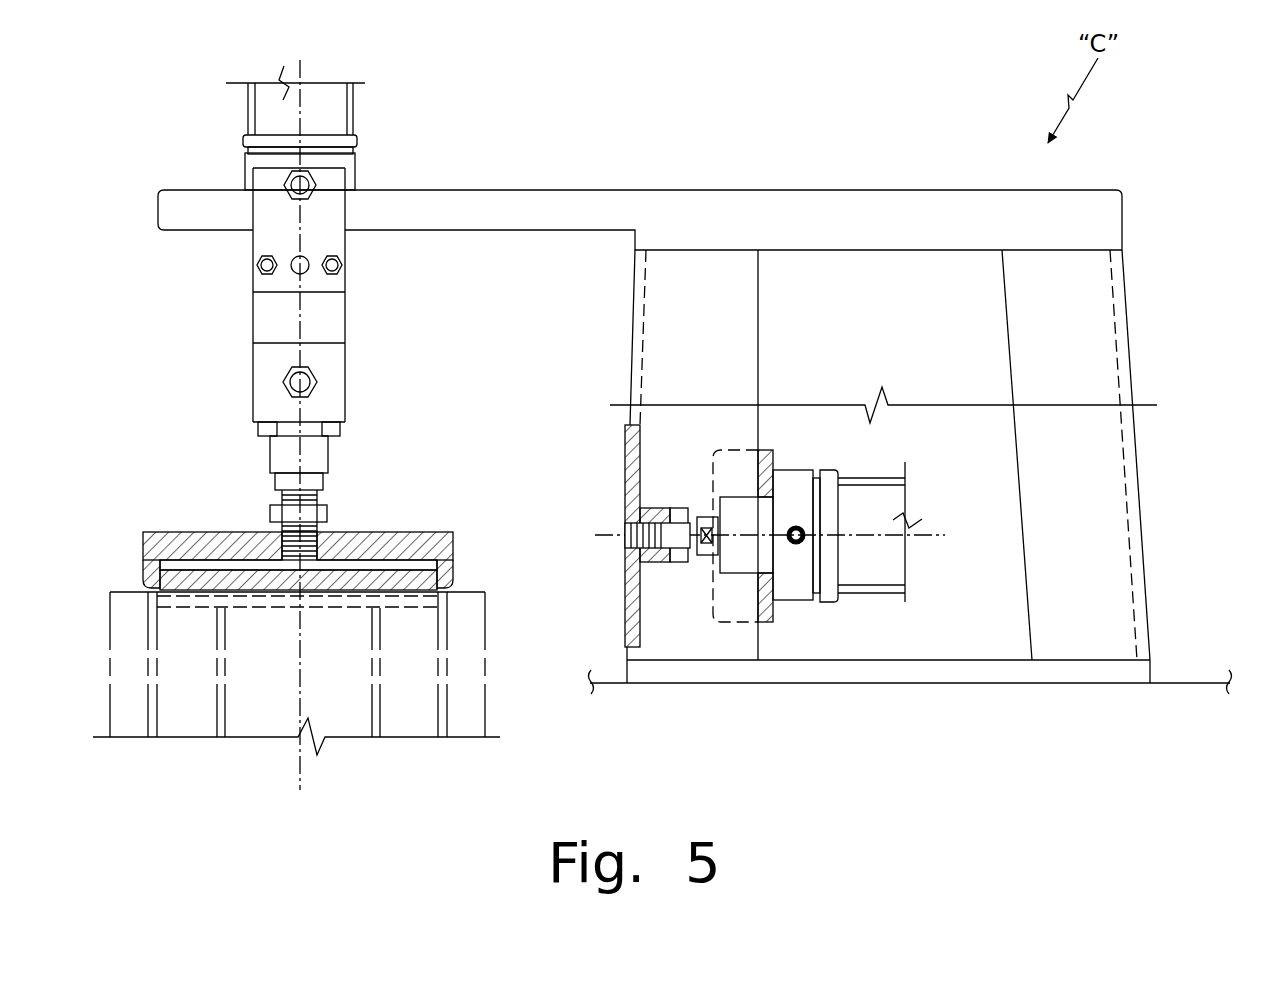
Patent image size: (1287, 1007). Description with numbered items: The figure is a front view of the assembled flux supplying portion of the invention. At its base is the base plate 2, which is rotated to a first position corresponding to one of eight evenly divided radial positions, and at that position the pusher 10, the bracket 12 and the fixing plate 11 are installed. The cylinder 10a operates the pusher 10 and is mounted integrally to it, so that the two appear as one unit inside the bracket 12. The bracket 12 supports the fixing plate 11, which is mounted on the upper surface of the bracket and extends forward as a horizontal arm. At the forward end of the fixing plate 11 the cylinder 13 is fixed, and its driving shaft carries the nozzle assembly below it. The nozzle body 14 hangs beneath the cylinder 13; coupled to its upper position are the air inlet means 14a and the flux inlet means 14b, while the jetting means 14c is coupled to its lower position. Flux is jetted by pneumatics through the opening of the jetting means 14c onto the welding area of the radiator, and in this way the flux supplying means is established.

The base plate 2 is at (643, 683).
The pusher 10 is at (623, 570).
The cylinder 10a is at (868, 563).
The fixing plate 11 is at (551, 208).
The bracket 12 is at (1138, 341).
The cylinder 13 is at (337, 99).
The nozzle body 14 is at (250, 274).
The air inlet means 14a is at (298, 182).
The flux inlet means 14b is at (302, 380).
The jetting means 14c is at (187, 540).